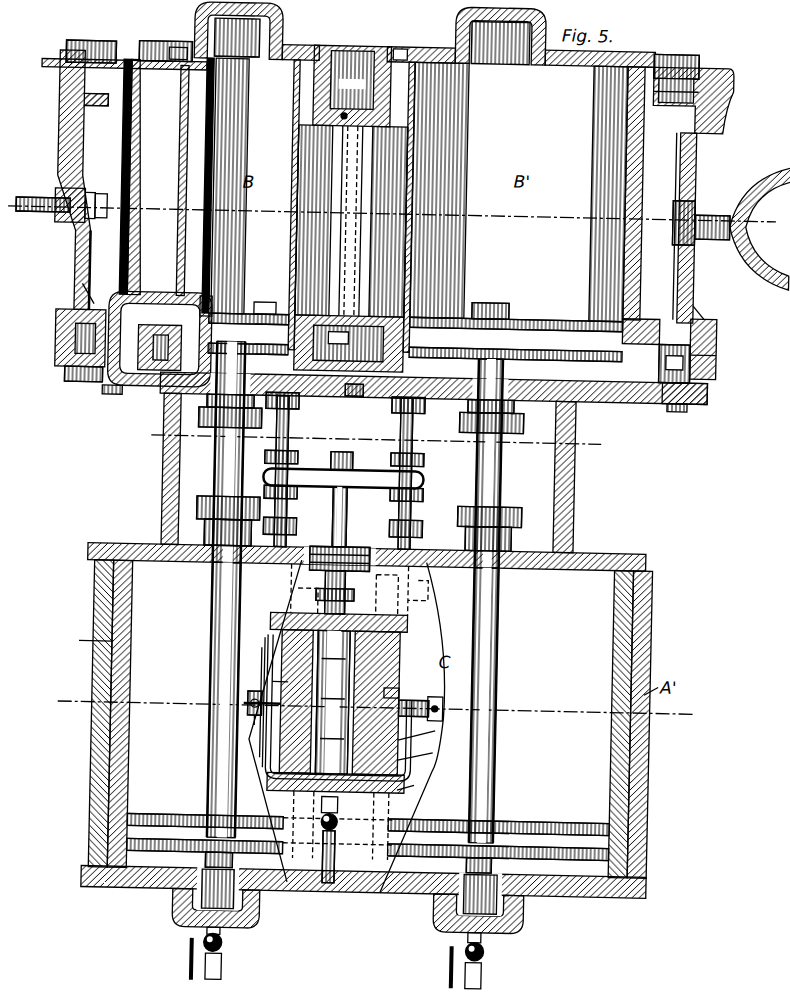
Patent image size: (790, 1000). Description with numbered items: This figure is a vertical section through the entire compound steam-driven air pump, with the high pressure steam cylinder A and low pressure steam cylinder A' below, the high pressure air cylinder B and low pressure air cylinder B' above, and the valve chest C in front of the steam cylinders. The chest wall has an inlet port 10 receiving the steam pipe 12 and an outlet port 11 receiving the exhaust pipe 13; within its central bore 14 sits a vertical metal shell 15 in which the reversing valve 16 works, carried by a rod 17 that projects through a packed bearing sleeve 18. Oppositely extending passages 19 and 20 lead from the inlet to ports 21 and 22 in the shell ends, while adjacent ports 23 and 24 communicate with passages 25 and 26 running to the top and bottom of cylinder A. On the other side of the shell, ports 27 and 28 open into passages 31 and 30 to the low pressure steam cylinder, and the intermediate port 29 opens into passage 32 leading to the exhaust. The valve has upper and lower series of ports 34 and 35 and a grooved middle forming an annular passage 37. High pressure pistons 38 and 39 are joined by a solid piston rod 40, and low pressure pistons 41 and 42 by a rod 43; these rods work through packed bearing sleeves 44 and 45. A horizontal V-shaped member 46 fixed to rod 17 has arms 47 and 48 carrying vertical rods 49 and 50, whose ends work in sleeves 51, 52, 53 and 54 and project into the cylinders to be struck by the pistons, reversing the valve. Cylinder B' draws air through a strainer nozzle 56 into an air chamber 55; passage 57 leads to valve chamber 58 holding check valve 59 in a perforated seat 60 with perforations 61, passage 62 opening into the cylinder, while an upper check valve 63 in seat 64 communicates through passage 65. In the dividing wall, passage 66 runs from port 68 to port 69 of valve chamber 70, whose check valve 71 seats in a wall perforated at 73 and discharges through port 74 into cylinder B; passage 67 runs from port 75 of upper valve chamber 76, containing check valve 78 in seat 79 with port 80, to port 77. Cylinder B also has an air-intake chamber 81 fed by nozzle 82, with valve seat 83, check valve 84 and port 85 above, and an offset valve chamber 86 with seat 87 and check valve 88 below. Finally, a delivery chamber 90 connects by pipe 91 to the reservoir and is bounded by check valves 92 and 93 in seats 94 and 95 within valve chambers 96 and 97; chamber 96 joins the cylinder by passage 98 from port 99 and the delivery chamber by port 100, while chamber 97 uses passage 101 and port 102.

The inlet port 10 is at (662, 397).
The outlet port 11 is at (420, 698).
The pipe 12 is at (250, 700).
The exhaust pipe 13 is at (440, 716).
The central bore 14 is at (355, 612).
The vertical metal shell 15 is at (395, 650).
The reversing valve 16 is at (398, 778).
The rod 17 is at (347, 520).
The packed bearing sleeve 18 is at (350, 592).
The passage 19 is at (272, 652).
The passage 20 is at (280, 765).
The port 21 is at (306, 618).
The port 22 is at (298, 812).
The port 23 is at (286, 666).
The port 24 is at (282, 735).
The passage 25 is at (290, 606).
The passage 26 is at (253, 790).
The port 27 is at (435, 660).
The port 28 is at (432, 778).
The intermediate port 29 is at (425, 755).
The passage 30 is at (415, 600).
The passage 31 is at (346, 822).
The passage 32 is at (396, 688).
The ports 34 is at (284, 684).
The ports 35 is at (426, 778).
The annular passage 37 is at (262, 724).
The high pressure piston 38 is at (216, 820).
The high pressure piston 39 is at (296, 318).
The piston rod 40 is at (214, 603).
The low pressure piston 41 is at (514, 822).
The low pressure piston 42 is at (528, 325).
The piston rod 43 is at (500, 700).
The packed bearing sleeve 44 is at (214, 505).
The packed bearing sleeve 45 is at (216, 441).
The V-shaped member 46 is at (330, 474).
The arm 47 is at (300, 492).
The arm 48 is at (352, 490).
The rod 49 is at (288, 432).
The rod 50 is at (399, 432).
The packed bearing sleeve 51 is at (297, 530).
The packed bearing sleeve 52 is at (297, 404).
The sleeve 53 is at (423, 530).
The sleeve 54 is at (423, 405).
The air chamber 55 is at (686, 155).
The strainer nozzle 56 is at (745, 172).
The passage 57 is at (693, 310).
The valve chamber 58 is at (713, 325).
The check valve 59 is at (697, 316).
The cylindrical seat 60 is at (713, 349).
The perforations 61 is at (703, 390).
The passage 62 is at (664, 340).
The check valve 63 is at (700, 64).
The seat 64 is at (690, 86).
The passage 65 is at (655, 55).
The vertical passage 66 is at (357, 218).
The vertical passage 67 is at (288, 240).
The port 68 is at (390, 56).
The port 69 is at (392, 403).
The valve chamber 70 is at (385, 240).
The check valve 71 is at (292, 300).
The perforations 73 is at (352, 388).
The port 74 is at (257, 302).
The port 75 is at (300, 135).
The upper valve chamber 76 is at (300, 120).
The port 77 is at (412, 265).
The check valve 78 is at (332, 72).
The seat 79 is at (403, 92).
The port 80 is at (286, 90).
The air-intake chamber 81 is at (90, 210).
The nozzle 82 is at (72, 228).
The valve seat 83 is at (182, 90).
The check valve 84 is at (176, 52).
The port 85 is at (200, 70).
The offset valve chamber 86 is at (178, 300).
The seat 87 is at (208, 302).
The check valve 88 is at (136, 389).
The delivery chamber 90 is at (74, 285).
The pipe 91 is at (36, 220).
The check valve 92 is at (82, 50).
The check valve 93 is at (72, 345).
The seat 94 is at (55, 85).
The seat 95 is at (64, 378).
The valve chamber 96 is at (60, 68).
The valve chamber 97 is at (54, 328).
The passage 98 is at (118, 66).
The port 99 is at (150, 46).
The port 100 is at (100, 106).
The passage 101 is at (78, 300).
The port 102 is at (105, 383).